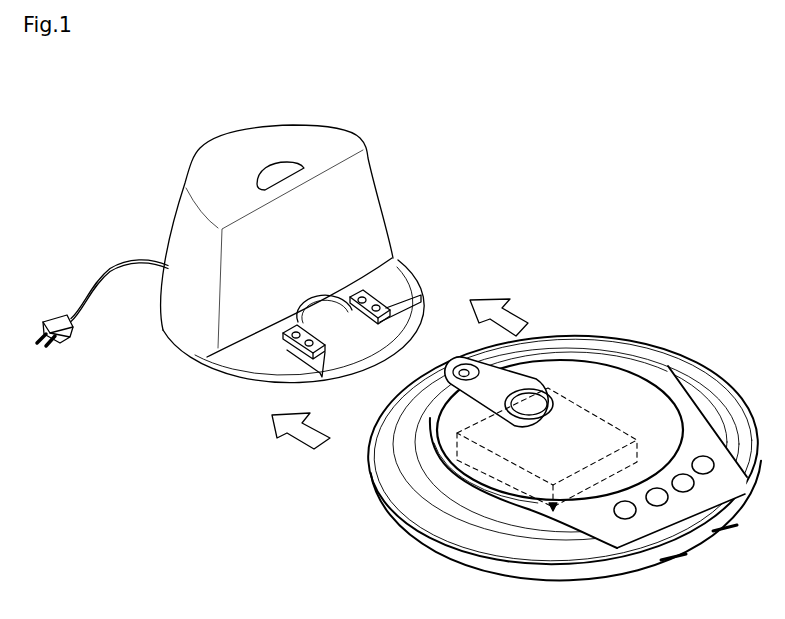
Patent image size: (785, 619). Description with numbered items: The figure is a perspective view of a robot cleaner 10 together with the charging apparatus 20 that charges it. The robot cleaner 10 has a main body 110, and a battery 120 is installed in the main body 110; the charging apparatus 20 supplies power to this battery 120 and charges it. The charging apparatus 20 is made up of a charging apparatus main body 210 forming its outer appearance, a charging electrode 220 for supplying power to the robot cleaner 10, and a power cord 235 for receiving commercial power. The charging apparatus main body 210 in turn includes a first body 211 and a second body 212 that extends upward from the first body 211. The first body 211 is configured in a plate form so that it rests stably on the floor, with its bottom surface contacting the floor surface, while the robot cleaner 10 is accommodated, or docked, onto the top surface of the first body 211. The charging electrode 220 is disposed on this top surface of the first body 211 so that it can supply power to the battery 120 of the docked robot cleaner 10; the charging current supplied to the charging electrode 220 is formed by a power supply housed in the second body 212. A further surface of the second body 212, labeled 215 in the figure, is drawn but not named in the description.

The robot cleaner 10 is at (546, 418).
The main body 110 is at (603, 351).
The battery 120 is at (457, 462).
The charging apparatus 20 is at (292, 274).
The charging apparatus main body 210 is at (354, 254).
The first body 211 is at (330, 312).
The second body 212 is at (330, 142).
The front cover surface 215 is at (353, 201).
The charging electrode 220 is at (283, 340).
The power cord 235 is at (53, 317).